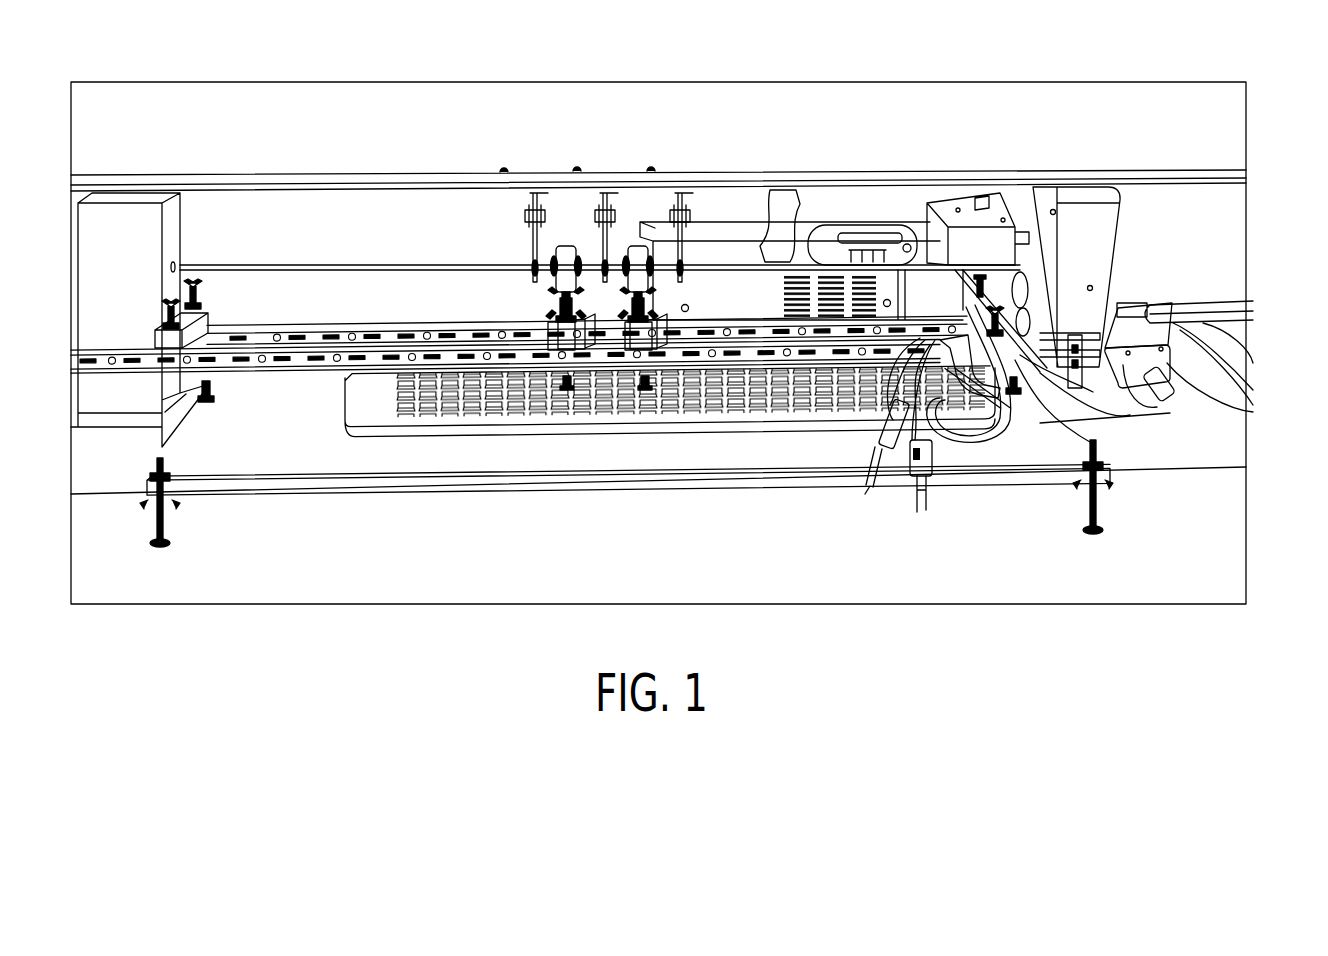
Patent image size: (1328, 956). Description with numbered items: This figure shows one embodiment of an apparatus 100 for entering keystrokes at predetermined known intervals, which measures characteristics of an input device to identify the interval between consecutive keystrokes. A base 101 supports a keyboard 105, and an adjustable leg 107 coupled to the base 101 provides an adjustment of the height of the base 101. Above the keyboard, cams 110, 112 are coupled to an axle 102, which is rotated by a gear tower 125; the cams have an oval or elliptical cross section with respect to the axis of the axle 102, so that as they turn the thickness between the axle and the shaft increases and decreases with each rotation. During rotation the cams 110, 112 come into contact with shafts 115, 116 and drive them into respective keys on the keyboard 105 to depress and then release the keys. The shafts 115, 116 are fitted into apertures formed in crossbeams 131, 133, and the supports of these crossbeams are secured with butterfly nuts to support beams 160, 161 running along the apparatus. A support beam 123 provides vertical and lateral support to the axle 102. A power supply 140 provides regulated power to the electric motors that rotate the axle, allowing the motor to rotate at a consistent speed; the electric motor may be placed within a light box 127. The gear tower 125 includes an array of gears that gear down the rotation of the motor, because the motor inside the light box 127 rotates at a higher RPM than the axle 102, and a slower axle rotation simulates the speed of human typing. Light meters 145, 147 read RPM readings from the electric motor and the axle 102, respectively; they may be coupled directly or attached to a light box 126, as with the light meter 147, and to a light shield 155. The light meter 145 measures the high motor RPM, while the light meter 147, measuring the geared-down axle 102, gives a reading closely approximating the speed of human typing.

The apparatus 100 is at (1010, 57).
The base 101 is at (382, 485).
The axle 102 is at (450, 268).
The keyboard 105 is at (470, 436).
The adjustable leg 107 is at (205, 398).
The cam 110 is at (567, 245).
The cam 112 is at (641, 245).
The shaft 115 is at (567, 388).
The shaft 116 is at (645, 382).
The support beam 123 is at (255, 177).
The gear tower 125 is at (1118, 240).
The light box 126 is at (962, 204).
The light box 127 is at (1215, 412).
The crossbeam 131 is at (548, 320).
The crossbeam 133 is at (624, 380).
The power supply 140 is at (725, 240).
The light meter 145 is at (1238, 350).
The light meter 147 is at (862, 224).
The light shield 155 is at (1235, 385).
The support beam 160 is at (334, 365).
The support beam 161 is at (318, 331).